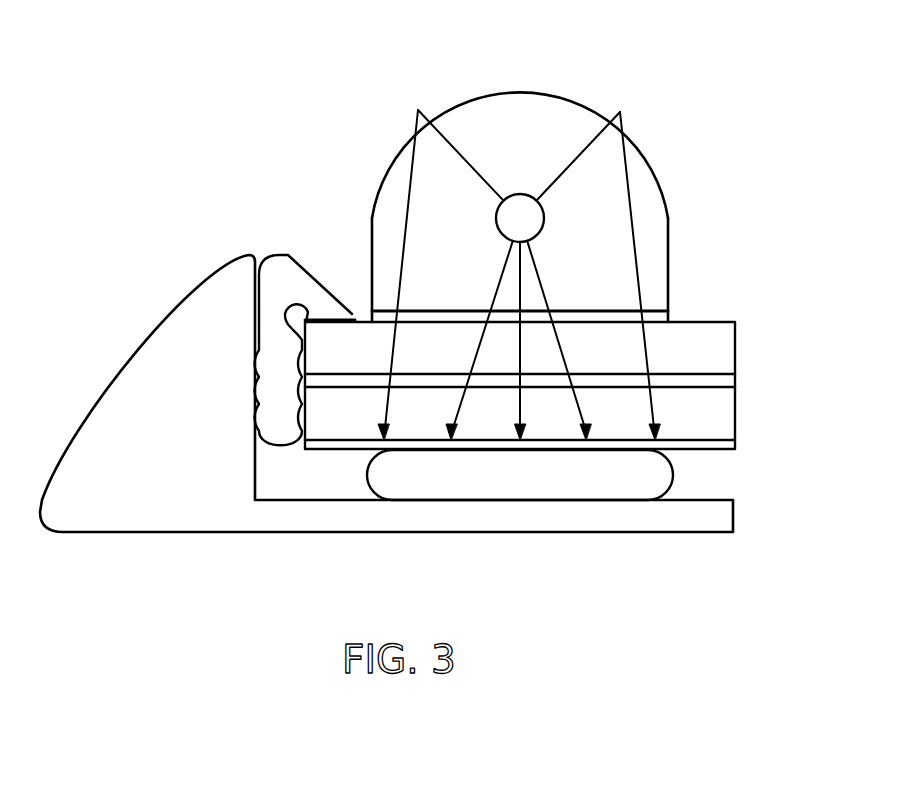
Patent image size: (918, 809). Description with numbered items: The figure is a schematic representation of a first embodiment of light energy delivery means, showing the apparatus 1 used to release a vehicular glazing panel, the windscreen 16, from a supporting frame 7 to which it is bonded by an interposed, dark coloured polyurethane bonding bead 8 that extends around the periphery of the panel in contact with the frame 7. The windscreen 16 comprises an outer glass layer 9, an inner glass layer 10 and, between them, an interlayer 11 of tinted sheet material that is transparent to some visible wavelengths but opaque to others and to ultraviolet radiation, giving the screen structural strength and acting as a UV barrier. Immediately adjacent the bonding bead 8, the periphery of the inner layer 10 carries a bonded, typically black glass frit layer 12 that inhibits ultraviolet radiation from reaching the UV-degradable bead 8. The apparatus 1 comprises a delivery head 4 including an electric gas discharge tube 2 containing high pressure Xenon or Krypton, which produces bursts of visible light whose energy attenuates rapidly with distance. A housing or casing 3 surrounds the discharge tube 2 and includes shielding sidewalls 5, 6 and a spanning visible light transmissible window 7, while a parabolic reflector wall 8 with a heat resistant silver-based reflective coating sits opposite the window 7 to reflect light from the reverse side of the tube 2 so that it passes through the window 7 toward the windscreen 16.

The apparatus 1 is at (678, 126).
The electric gas discharge tube 2 is at (521, 196).
The housing/casing 3 is at (663, 175).
The delivery head 4 is at (681, 245).
The shielding sidewall 5 is at (372, 201).
The shielding sidewall 6 is at (672, 278).
The supporting frame 7 is at (313, 521).
The polyurethane bonding bead 8 is at (527, 73).
The outer glass layer 9 is at (733, 345).
The inner glass layer 10 is at (733, 420).
The interlayer 11 is at (733, 381).
The glass frit layer 12 is at (735, 448).
The windscreen 16 is at (745, 306).